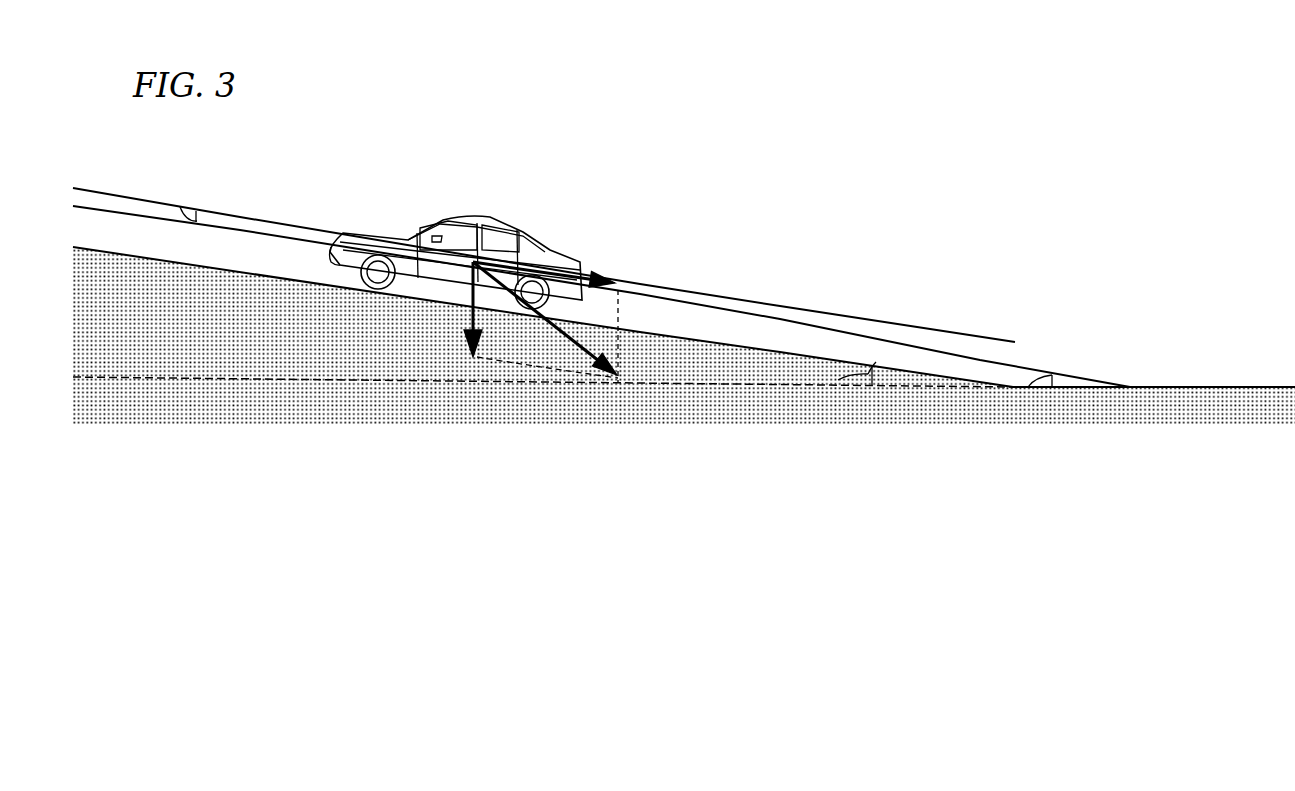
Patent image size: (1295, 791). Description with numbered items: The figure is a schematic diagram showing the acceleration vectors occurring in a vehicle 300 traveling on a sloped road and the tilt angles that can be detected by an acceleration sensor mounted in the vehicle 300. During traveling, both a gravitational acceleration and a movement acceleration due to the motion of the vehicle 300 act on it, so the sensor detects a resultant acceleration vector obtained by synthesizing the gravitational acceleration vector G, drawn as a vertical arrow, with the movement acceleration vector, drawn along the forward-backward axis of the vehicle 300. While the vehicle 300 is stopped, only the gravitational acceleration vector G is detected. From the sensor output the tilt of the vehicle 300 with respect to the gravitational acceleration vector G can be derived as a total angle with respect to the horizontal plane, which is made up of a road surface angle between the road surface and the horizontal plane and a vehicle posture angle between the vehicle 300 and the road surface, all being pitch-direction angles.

The vehicle 300 is at (548, 240).
The gravitational acceleration vector G is at (465, 312).